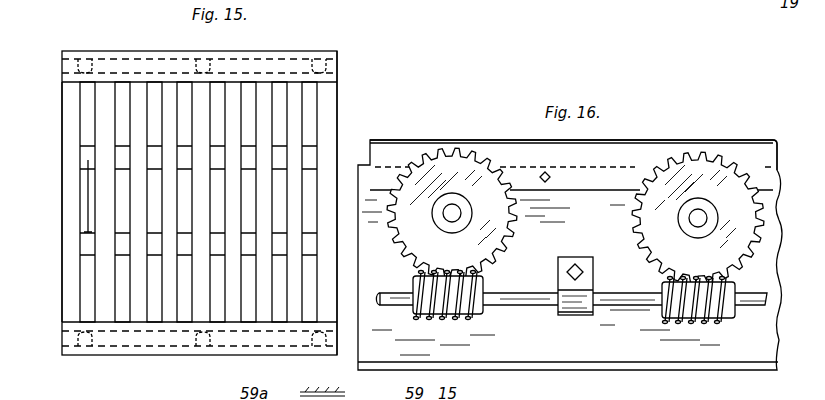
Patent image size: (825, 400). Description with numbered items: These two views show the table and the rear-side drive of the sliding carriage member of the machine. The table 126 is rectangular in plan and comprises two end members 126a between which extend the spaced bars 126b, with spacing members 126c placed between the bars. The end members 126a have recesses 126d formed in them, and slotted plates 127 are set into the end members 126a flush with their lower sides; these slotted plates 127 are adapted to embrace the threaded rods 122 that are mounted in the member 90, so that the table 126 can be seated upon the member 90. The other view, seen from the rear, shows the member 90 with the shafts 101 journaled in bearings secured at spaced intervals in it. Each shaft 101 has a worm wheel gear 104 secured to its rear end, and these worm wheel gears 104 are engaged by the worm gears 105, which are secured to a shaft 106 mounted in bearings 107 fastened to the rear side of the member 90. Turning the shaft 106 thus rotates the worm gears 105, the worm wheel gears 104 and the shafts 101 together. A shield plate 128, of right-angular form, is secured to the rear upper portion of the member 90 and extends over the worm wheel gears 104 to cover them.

In FIG. 15, the rod 122 is at (77, 15).
In FIG. 15, the table 126 is at (199, 203).
In FIG. 15, the end member 126a is at (137, 57).
In FIG. 15, the spaced bar 126b is at (62, 128).
In FIG. 15, the spacing member 126c is at (88, 167).
In FIG. 15, the recess 126d is at (339, 73).
In FIG. 15, the slotted plate 127 is at (276, 59).
In FIG. 16, the shield plate 128 is at (714, 144).
In FIG. 16, the shaft 101 is at (456, 215).
In FIG. 16, the worm wheel gear 104 is at (400, 257).
In FIG. 16, the worm gear 105 is at (482, 314).
In FIG. 16, the shaft 106 is at (521, 291).
In FIG. 16, the bearing 107 is at (592, 279).
In FIG. 16, the member 90 is at (617, 348).